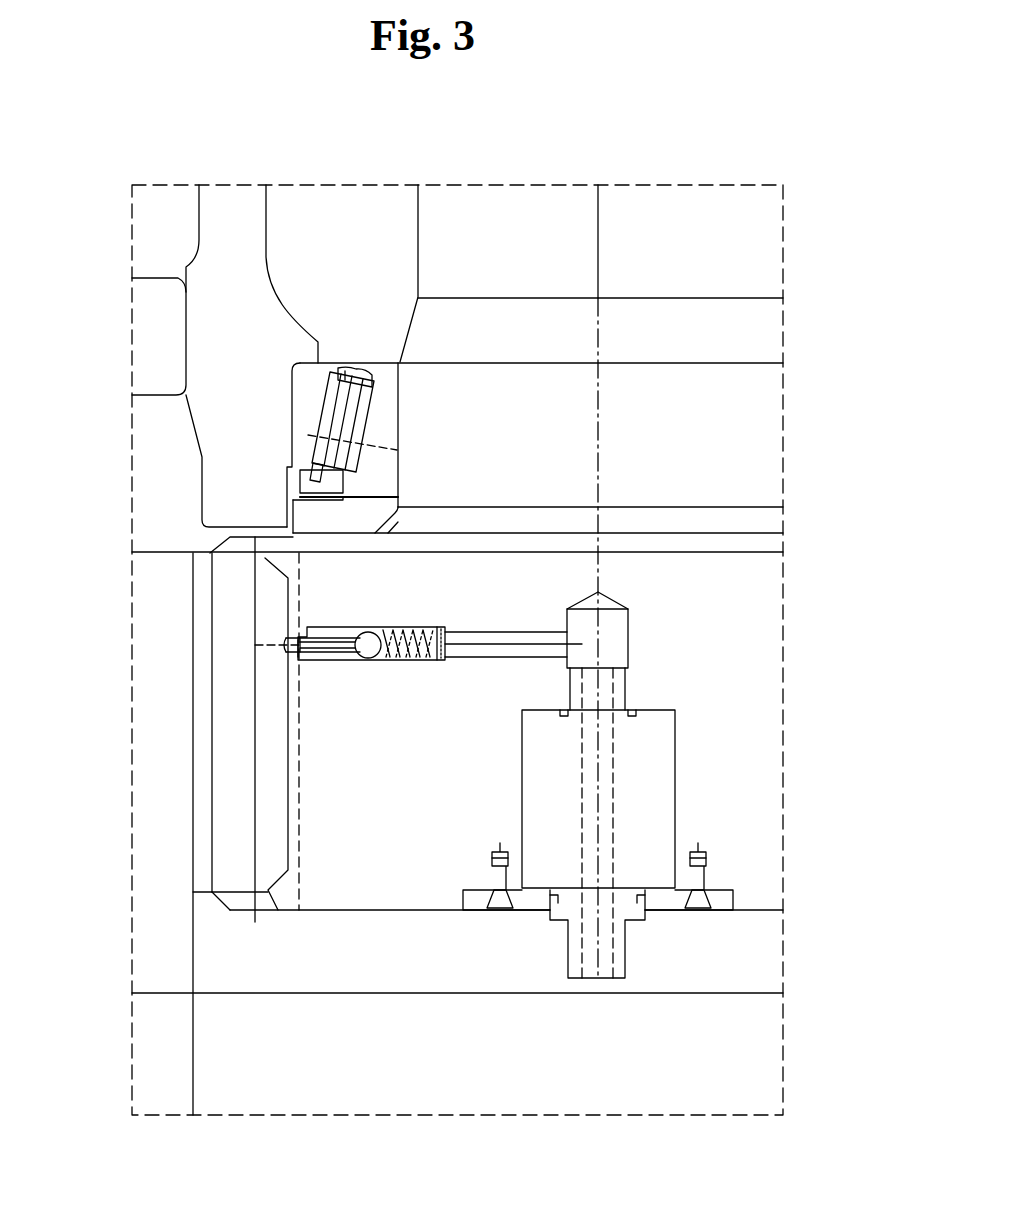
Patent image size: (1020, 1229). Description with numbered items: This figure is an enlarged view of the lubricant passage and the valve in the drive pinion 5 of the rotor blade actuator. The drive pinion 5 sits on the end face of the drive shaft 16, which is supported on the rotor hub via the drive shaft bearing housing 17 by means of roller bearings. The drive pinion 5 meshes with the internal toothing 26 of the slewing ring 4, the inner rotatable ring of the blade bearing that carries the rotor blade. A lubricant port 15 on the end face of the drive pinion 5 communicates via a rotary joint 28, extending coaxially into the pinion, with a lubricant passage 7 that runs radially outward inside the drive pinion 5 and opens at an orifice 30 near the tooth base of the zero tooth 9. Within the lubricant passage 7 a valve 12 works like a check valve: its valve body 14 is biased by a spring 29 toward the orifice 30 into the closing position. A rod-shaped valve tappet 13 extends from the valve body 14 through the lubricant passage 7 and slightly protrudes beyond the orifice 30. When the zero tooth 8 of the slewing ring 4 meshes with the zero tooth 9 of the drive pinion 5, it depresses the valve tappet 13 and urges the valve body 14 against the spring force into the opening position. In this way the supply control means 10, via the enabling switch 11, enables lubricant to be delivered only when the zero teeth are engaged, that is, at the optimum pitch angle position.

The slewing ring 4 is at (140, 932).
The drive pinion 5 is at (770, 773).
The lubricant passage 7 is at (488, 632).
The zero tooth of the slewing ring 8 is at (279, 912).
The zero tooth of the drive pinion 9 is at (230, 912).
The supply control means 10 is at (294, 664).
The enabling switch 11 is at (280, 662).
The valve 12 is at (385, 631).
The valve tappet 13 is at (305, 655).
The valve body 14 is at (366, 634).
The lubricant port 15 is at (620, 953).
The drive shaft 16 is at (681, 195).
The drive shaft bearing housing 17 is at (210, 238).
The internal toothing 26 is at (202, 845).
The rotary joint 28 is at (660, 762).
The spring 29 is at (418, 661).
The orifice 30 is at (297, 628).